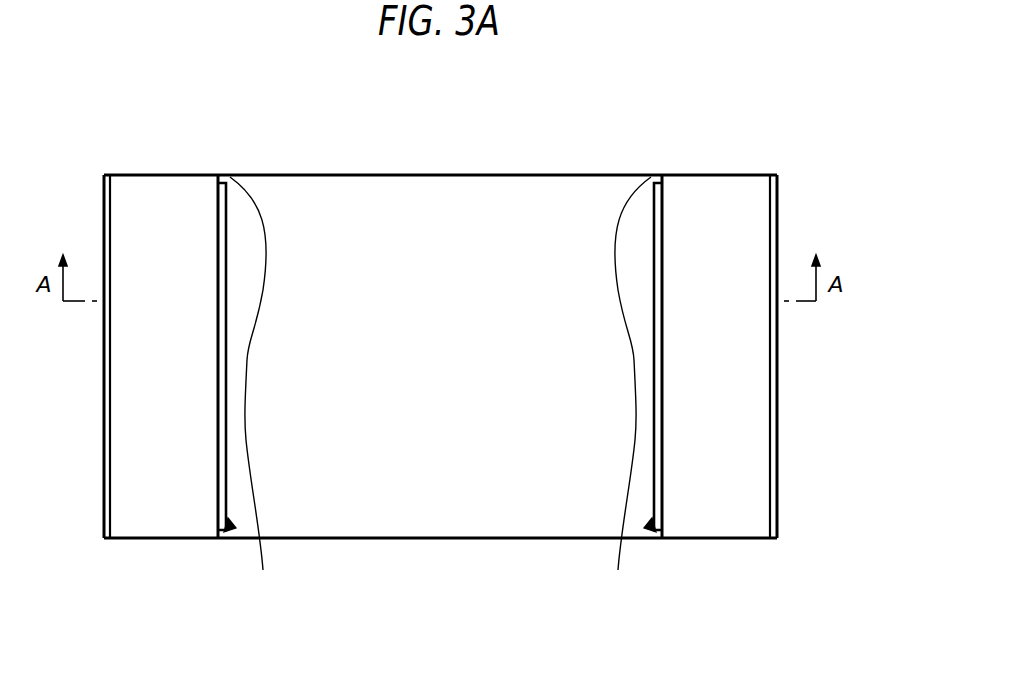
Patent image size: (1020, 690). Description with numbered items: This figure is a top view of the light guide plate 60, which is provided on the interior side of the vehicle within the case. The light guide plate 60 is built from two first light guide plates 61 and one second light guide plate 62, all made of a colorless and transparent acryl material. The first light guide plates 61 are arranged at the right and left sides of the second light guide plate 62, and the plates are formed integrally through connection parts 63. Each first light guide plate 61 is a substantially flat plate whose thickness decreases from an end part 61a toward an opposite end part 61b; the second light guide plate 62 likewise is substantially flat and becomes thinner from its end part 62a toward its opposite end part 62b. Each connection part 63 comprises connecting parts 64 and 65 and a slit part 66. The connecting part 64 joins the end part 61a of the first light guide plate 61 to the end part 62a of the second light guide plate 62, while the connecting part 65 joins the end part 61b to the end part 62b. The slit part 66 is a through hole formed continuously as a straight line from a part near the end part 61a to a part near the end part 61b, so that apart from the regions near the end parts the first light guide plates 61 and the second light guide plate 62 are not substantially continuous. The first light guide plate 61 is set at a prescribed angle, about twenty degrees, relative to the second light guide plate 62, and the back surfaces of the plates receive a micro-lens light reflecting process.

The light guide plate 60 is at (797, 134).
The first light guide plate 61 is at (155, 530).
The end part 61a is at (170, 174).
The opposite end part 61b is at (125, 538).
The second light guide plate 62 is at (470, 520).
The end part 62a is at (402, 174).
The opposite end part 62b is at (387, 538).
The connection part 63 is at (439, 417).
The connecting part 64 is at (440, 394).
The connecting part 65 is at (216, 538).
The slit part 66 is at (230, 530).